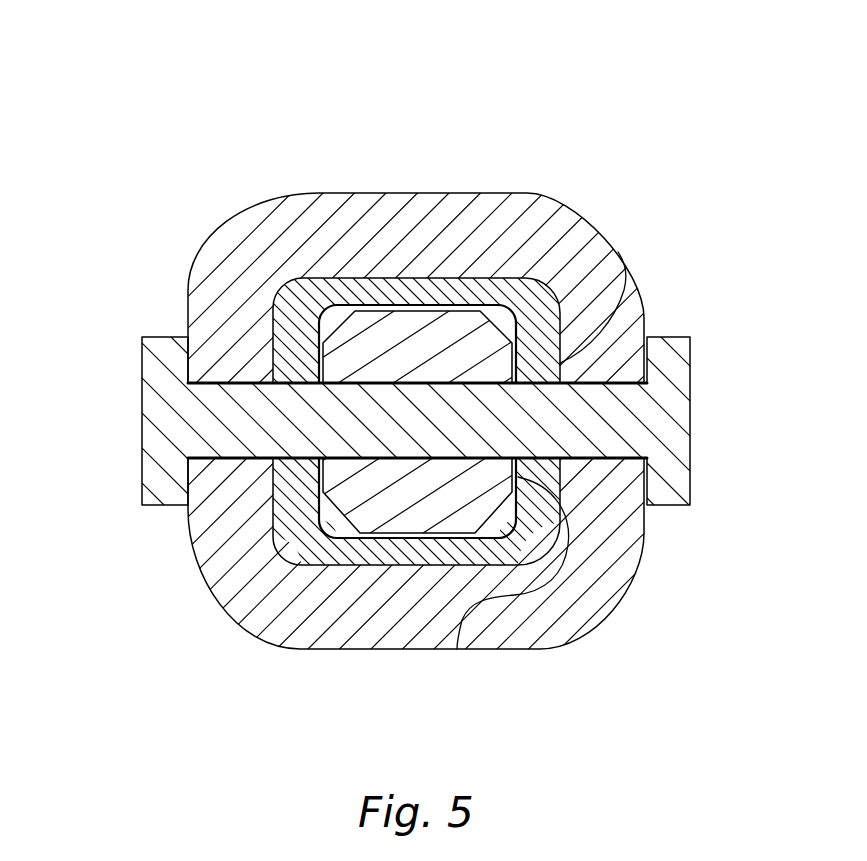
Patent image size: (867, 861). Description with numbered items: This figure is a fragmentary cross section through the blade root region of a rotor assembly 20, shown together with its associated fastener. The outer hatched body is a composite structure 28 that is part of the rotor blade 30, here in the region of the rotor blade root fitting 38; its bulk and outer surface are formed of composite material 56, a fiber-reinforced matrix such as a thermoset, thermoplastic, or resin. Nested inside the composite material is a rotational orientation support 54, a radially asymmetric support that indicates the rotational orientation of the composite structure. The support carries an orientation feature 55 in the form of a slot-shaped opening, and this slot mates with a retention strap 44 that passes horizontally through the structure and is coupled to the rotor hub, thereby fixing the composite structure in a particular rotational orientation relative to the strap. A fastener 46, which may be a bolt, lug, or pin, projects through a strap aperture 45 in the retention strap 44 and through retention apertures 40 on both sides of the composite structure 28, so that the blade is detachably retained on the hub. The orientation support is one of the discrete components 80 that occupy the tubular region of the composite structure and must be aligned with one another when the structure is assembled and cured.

The rotor assembly 20 is at (133, 97).
The composite structure 28 is at (113, 123).
The rotor blade 30 is at (110, 165).
The rotor blade root fitting 38 is at (92, 205).
The retention aperture 40 is at (189, 537).
The retention strap 44 is at (292, 552).
The strap aperture 45 is at (205, 550).
The fastener 46 is at (692, 452).
The rotational orientation support 54 is at (646, 304).
The orientation feature 55 is at (435, 534).
The composite material 56 is at (541, 213).
The discrete component 80 is at (562, 337).